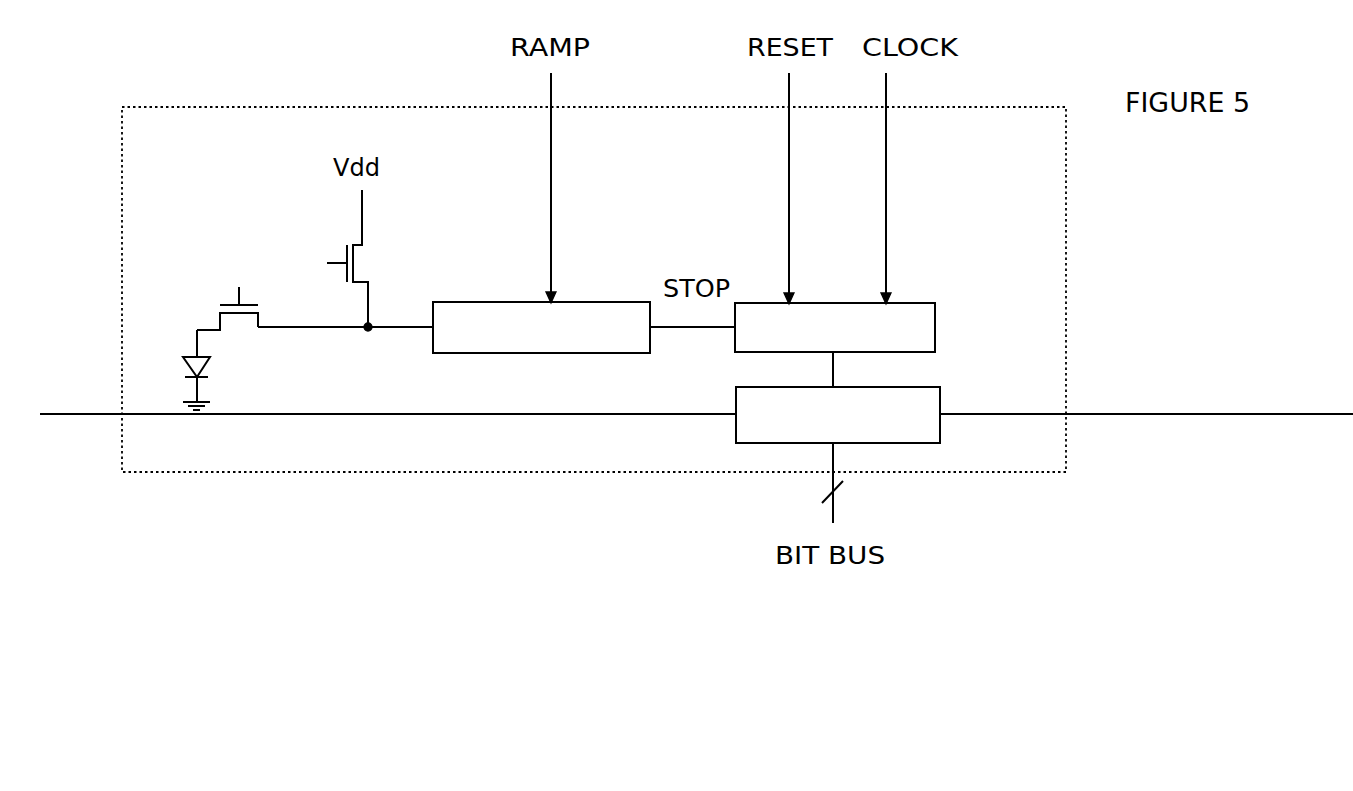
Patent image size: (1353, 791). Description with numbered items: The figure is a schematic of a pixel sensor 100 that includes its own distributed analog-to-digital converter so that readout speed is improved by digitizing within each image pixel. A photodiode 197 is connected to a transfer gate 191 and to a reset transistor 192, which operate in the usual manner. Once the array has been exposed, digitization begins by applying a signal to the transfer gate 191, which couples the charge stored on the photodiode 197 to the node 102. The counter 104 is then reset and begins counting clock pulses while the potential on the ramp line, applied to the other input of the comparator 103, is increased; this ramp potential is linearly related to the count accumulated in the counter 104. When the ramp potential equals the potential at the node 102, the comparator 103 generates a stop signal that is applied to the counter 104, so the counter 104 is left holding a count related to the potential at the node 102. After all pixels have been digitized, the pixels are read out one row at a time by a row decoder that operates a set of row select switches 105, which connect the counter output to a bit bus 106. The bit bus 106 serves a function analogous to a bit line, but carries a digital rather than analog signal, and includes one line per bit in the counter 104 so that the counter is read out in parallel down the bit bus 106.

The pixel sensor 100 is at (1067, 355).
The node 102 is at (390, 330).
The comparator 103 is at (568, 358).
The counter 104 is at (937, 338).
The row select switches 105 is at (943, 405).
The bit bus 106 is at (837, 520).
The transfer gate 191 is at (230, 307).
The reset transistor 192 is at (352, 270).
The photodiode 197 is at (203, 357).